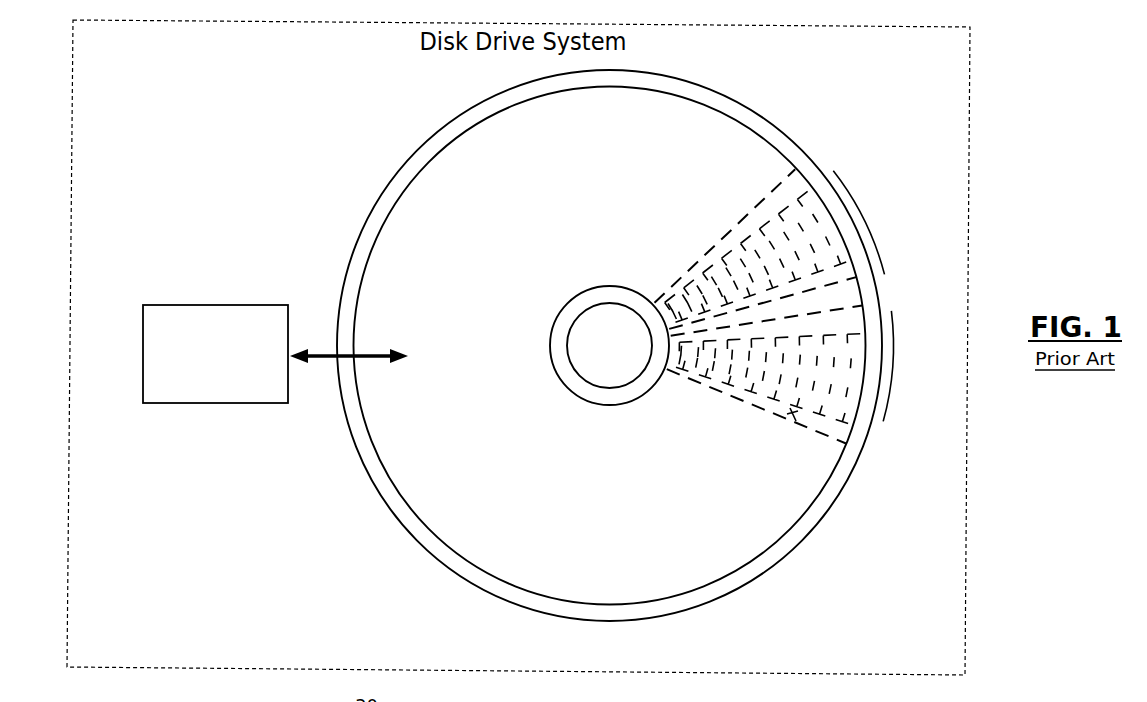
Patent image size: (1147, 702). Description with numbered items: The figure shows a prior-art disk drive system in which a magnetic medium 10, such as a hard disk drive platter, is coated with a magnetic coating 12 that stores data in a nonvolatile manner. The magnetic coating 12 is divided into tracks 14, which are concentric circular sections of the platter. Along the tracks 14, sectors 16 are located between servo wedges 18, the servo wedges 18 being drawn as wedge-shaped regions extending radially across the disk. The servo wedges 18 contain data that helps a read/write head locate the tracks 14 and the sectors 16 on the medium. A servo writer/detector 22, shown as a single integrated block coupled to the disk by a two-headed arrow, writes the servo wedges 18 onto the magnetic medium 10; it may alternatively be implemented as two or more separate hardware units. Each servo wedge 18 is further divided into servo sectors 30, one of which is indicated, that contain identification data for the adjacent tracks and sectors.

The magnetic medium 10 is at (390, 498).
The magnetic coating 12 is at (616, 503).
The tracks 14 is at (712, 284).
The sectors 16 is at (866, 216).
The servo wedges 18 is at (747, 206).
The servo writer/detector 22 is at (157, 343).
The servo sectors 30 is at (792, 417).